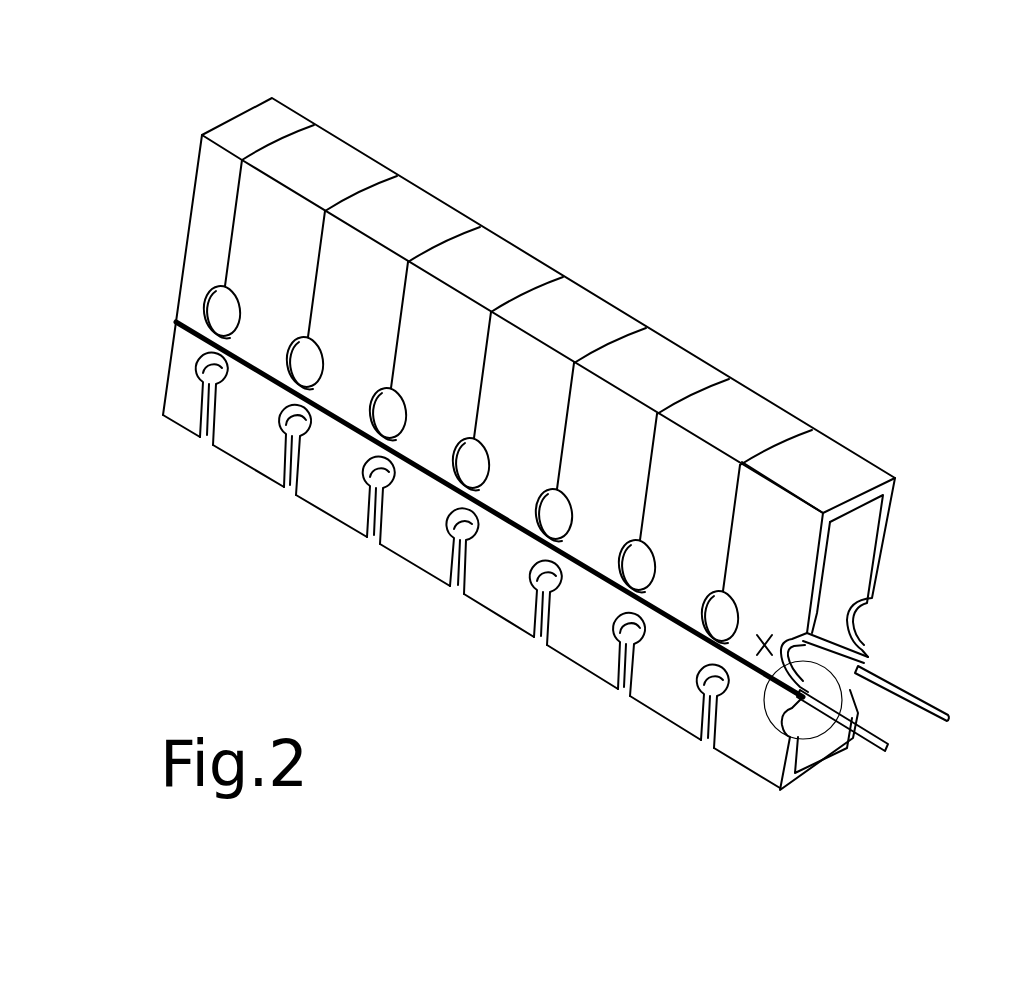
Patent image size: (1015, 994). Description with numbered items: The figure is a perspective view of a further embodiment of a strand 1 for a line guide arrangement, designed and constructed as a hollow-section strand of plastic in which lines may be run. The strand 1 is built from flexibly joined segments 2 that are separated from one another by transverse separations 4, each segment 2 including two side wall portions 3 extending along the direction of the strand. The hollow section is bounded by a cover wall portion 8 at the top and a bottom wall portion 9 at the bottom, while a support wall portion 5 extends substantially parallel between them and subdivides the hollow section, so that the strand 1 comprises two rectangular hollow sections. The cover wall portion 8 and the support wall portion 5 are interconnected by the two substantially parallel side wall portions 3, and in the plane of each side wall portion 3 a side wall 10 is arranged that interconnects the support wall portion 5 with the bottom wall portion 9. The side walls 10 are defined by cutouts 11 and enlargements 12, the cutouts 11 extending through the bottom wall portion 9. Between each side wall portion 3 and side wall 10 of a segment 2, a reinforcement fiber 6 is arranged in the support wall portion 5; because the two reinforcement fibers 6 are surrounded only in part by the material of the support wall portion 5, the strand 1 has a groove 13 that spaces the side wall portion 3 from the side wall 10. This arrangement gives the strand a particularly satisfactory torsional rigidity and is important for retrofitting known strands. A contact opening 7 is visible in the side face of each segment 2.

The strand 1 is at (412, 150).
The segments 2 is at (490, 269).
The side wall portions 3 is at (815, 616).
The transverse separations 4 is at (489, 357).
The support wall portion 5 is at (852, 677).
The reinforcement fiber 6 is at (890, 752).
The contact opening 7 is at (566, 494).
The cover wall portion 8 is at (749, 427).
The bottom wall portion 9 is at (819, 767).
The side wall 10 is at (604, 647).
The cutouts 11 is at (540, 619).
The enlargements 12 is at (442, 534).
The groove 13 is at (346, 434).